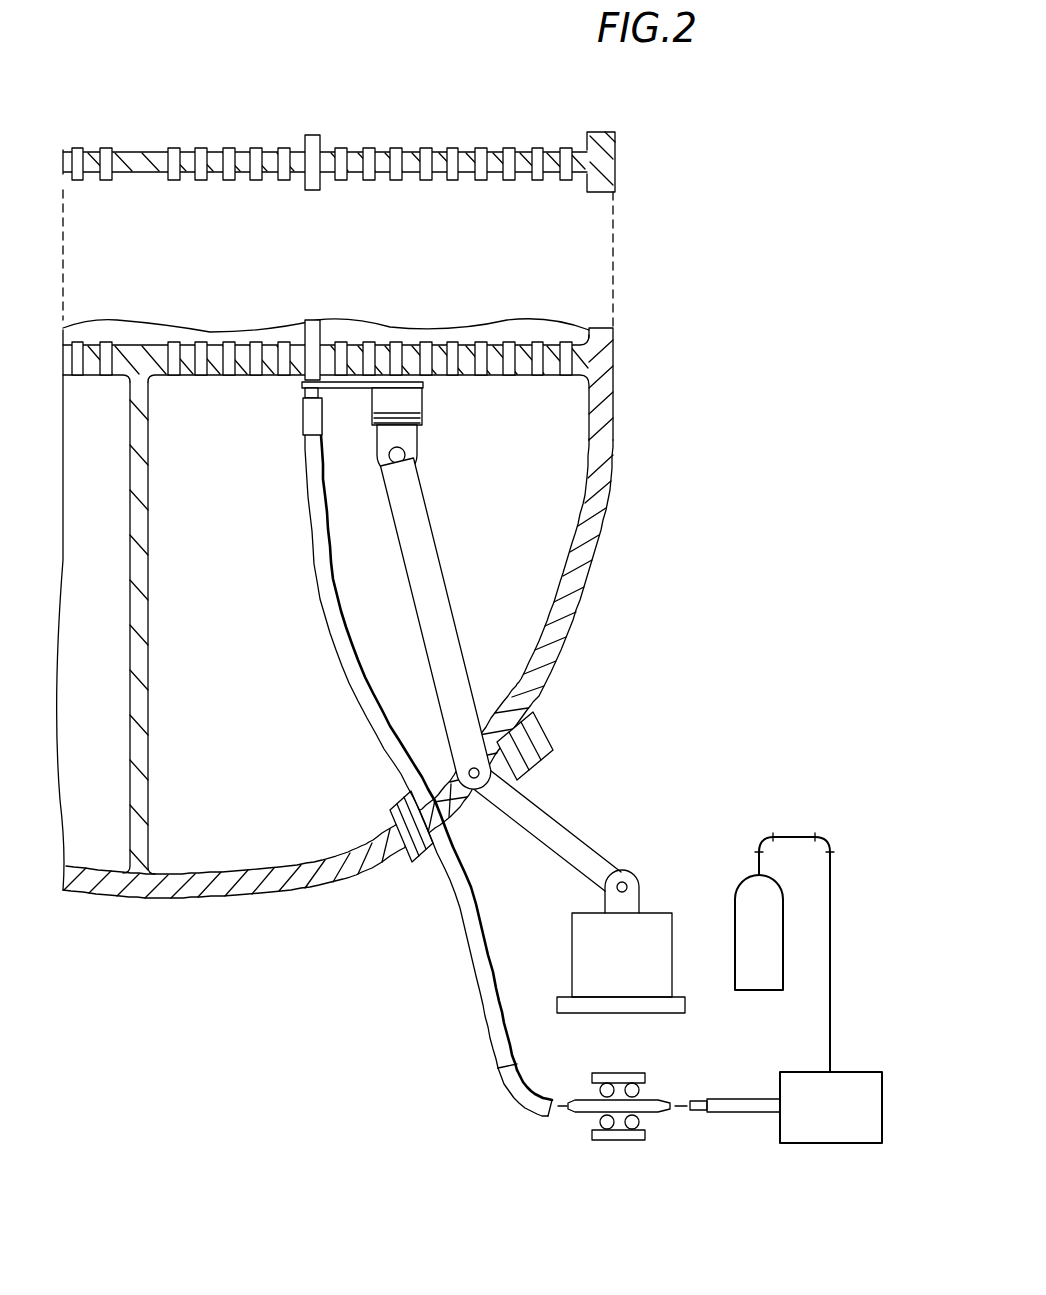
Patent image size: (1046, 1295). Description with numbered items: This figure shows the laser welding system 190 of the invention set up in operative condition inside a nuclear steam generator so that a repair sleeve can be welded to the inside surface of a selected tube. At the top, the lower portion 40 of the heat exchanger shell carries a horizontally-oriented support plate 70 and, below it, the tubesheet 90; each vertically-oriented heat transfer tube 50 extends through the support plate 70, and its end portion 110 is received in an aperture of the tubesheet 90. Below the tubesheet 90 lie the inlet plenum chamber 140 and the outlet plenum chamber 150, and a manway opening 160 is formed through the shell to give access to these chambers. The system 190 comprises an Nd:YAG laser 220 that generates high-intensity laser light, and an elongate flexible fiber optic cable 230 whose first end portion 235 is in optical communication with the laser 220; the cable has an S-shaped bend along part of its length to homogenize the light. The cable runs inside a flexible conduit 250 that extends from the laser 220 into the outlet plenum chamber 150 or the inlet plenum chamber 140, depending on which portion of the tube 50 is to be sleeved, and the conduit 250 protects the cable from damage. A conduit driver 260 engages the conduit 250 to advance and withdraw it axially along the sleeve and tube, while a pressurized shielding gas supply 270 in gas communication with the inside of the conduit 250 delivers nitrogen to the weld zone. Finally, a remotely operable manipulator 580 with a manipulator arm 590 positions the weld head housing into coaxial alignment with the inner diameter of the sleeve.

The lower portion 40 is at (603, 160).
The heat transfer tube 50 is at (320, 145).
The support plate 70 is at (132, 150).
The tubesheet 90 is at (133, 345).
The end portion 110 is at (300, 386).
The inlet plenum chamber 140 is at (335, 614).
The outlet plenum chamber 150 is at (171, 628).
The manway opening 160 is at (505, 730).
The system 190 is at (648, 744).
The laser 220 is at (817, 1145).
The fiber optic cable 230 is at (523, 1100).
The first end portion 235 is at (732, 1112).
The flexible conduit 250 is at (498, 1053).
The conduit driver 260 is at (603, 1137).
The pressurized shielding gas supply 270 is at (747, 895).
The remotely operable manipulator 580 is at (607, 837).
The manipulator arm 590 is at (430, 565).